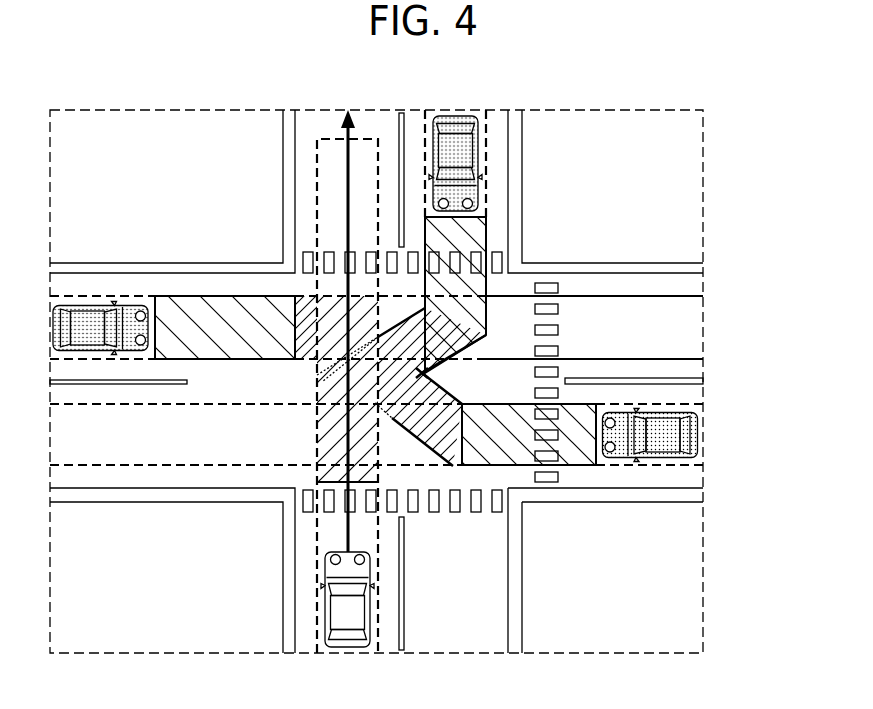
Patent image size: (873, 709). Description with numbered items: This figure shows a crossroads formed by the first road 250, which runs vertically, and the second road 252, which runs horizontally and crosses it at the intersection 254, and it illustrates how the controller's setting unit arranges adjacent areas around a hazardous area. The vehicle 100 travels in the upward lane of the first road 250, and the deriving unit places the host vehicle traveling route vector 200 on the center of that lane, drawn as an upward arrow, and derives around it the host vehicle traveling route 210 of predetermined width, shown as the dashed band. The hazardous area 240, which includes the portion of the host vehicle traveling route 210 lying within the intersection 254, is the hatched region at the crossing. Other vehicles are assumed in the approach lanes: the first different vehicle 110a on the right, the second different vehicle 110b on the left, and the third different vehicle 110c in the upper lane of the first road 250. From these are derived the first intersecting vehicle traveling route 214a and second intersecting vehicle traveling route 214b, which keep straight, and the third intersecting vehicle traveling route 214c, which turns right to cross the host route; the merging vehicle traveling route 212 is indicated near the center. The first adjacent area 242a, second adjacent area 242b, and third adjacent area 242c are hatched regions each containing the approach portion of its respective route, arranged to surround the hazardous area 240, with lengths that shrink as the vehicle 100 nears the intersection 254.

The vehicle 100 is at (322, 608).
The first different vehicle 110a is at (657, 413).
The second different vehicle 110b is at (103, 302).
The third different vehicle 110c is at (487, 157).
The host vehicle traveling route vector 200 is at (348, 155).
The host vehicle traveling route 210 is at (317, 181).
The merging vehicle traveling route 212 is at (450, 386).
The first intersecting vehicle traveling route 214a is at (187, 466).
The second intersecting vehicle traveling route 214b is at (653, 296).
The third intersecting vehicle traveling route 214c is at (487, 200).
The hazardous area 240 is at (318, 432).
The first adjacent area 242a is at (573, 448).
The second adjacent area 242b is at (198, 305).
The third adjacent area 242c is at (452, 238).
The first road 250 is at (490, 603).
The second road 252 is at (665, 478).
The intersection 254 is at (497, 477).